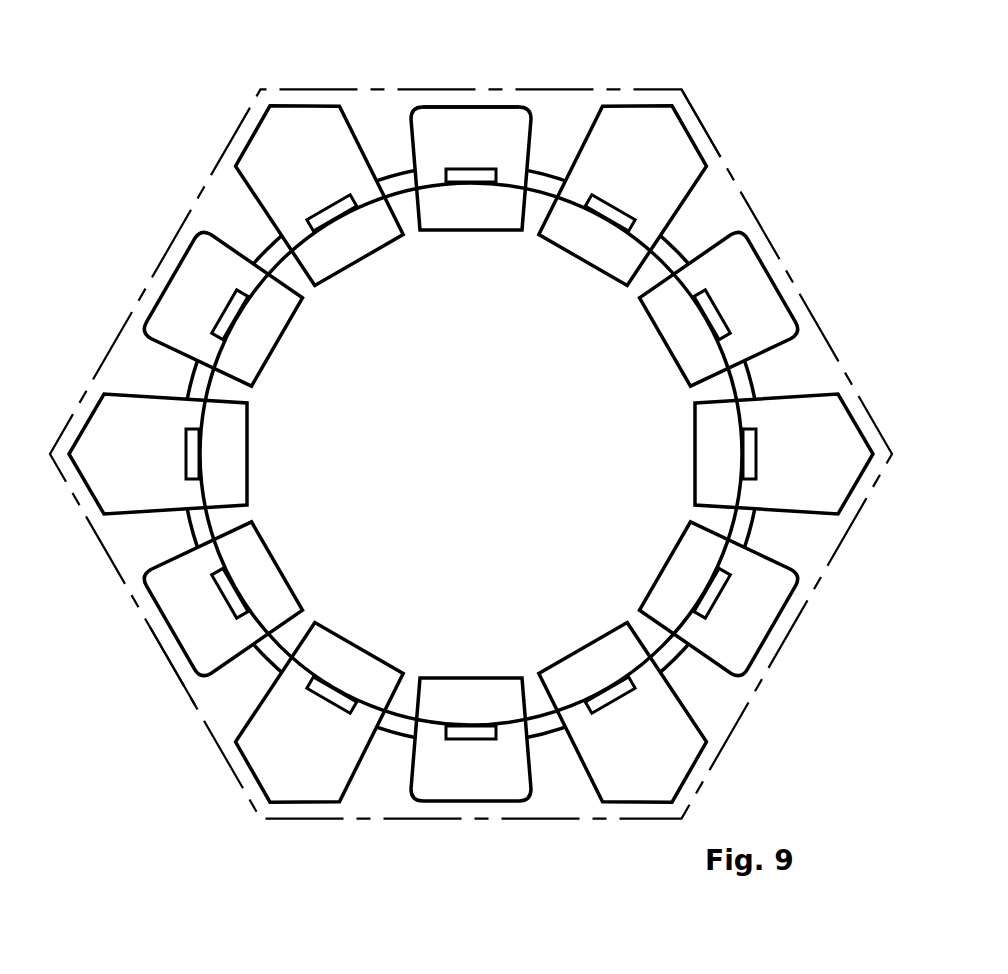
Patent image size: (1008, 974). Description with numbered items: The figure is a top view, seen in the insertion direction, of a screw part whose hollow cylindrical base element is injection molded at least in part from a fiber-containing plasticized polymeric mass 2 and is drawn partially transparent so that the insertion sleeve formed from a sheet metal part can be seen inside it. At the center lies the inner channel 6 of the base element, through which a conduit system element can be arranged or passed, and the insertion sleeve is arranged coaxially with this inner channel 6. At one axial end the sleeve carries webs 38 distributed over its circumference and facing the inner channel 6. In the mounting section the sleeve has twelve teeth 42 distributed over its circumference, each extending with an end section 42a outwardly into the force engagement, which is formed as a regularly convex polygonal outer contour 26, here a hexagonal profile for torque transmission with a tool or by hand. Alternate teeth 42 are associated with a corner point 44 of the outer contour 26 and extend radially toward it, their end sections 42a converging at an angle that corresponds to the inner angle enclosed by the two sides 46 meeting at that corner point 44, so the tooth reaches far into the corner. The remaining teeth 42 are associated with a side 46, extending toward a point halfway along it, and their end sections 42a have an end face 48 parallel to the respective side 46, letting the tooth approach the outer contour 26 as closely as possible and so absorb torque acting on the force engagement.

The plasticized polymeric mass 2 is at (470, 434).
The inner channel 6 is at (468, 474).
The outer contour 26 is at (172, 670).
The webs 38 is at (722, 463).
The teeth 42 is at (260, 167).
The end section 42a is at (440, 113).
The corner point 44 is at (683, 88).
The sides 46 is at (640, 88).
The end face 48 is at (478, 107).